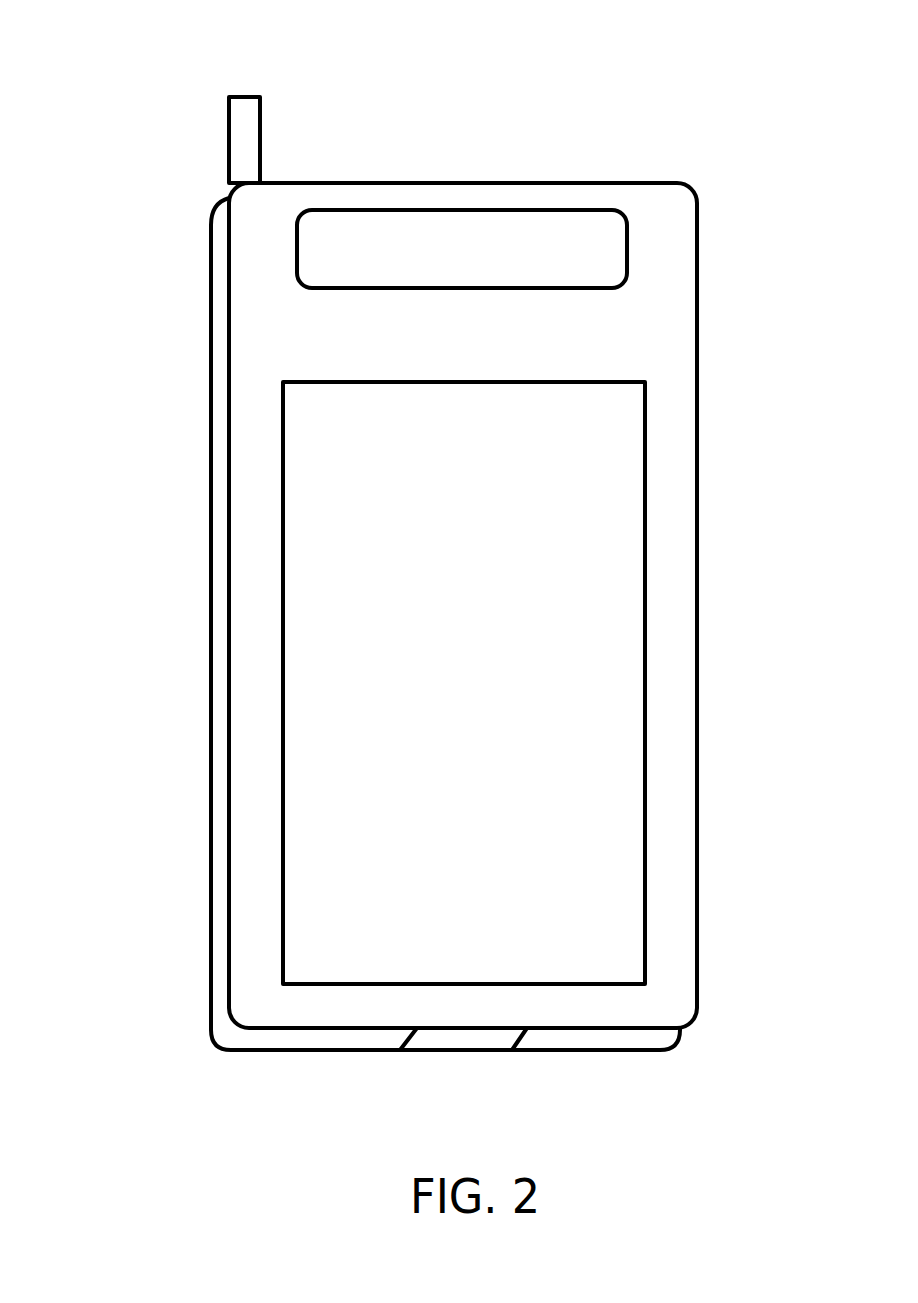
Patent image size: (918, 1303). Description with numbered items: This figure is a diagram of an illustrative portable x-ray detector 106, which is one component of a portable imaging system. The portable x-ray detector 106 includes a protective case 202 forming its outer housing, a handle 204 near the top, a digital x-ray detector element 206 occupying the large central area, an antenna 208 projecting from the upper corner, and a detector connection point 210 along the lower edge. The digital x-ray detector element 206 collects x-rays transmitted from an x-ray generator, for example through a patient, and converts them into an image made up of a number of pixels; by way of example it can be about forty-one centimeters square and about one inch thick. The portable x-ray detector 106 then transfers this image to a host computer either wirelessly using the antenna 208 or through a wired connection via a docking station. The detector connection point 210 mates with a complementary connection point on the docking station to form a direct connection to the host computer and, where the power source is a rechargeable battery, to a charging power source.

The portable x-ray detector 106 is at (810, 82).
The protective case 202 is at (698, 608).
The handle 204 is at (538, 210).
The digital x-ray detector element 206 is at (283, 750).
The antenna 208 is at (230, 137).
The detector connection point 210 is at (430, 1050).